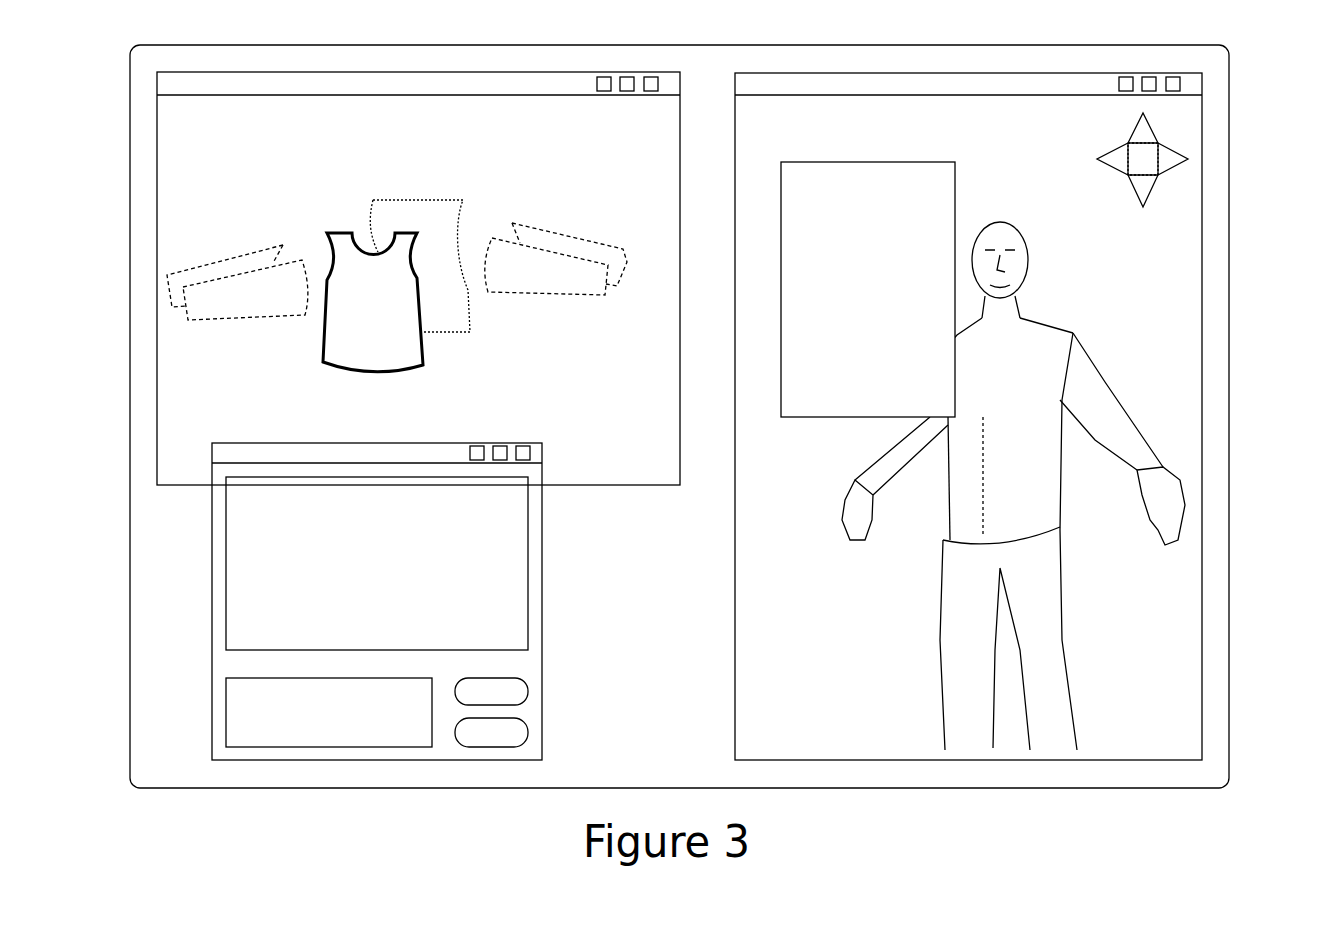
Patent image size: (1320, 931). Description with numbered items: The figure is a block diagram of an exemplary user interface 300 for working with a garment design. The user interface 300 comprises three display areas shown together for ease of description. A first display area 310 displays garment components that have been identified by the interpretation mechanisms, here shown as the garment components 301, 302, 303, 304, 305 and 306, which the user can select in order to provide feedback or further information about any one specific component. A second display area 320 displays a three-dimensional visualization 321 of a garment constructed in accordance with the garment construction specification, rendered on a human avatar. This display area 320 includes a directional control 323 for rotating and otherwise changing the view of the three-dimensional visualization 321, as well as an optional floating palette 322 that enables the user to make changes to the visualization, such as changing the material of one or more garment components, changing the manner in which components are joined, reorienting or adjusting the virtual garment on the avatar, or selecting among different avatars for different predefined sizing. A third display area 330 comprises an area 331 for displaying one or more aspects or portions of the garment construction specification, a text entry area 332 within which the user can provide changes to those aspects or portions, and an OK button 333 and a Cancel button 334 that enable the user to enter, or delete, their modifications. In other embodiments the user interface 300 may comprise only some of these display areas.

The user interface 300 is at (129, 122).
The display area 310 is at (582, 487).
The garment component 301 is at (398, 375).
The garment component 302 is at (395, 200).
The garment component 303 is at (513, 293).
The garment component 304 is at (542, 233).
The garment component 305 is at (238, 255).
The garment component 306 is at (205, 320).
The display area 320 is at (733, 600).
The three-dimensional visualization 321 is at (1064, 307).
The floating palette 322 is at (809, 162).
The directional control 323 is at (1180, 136).
The display area 330 is at (543, 582).
The area 331 is at (232, 582).
The text entry area 332 is at (232, 703).
The OK button 333 is at (523, 684).
The Cancel button 334 is at (523, 728).